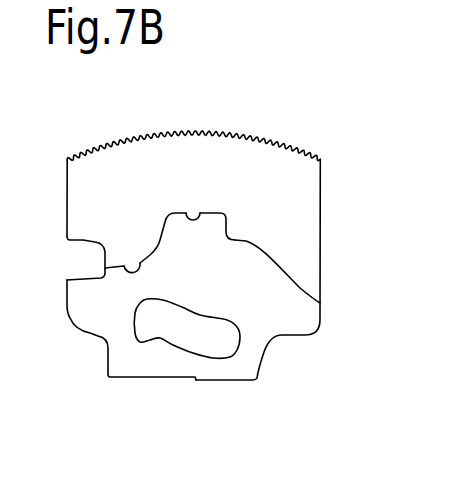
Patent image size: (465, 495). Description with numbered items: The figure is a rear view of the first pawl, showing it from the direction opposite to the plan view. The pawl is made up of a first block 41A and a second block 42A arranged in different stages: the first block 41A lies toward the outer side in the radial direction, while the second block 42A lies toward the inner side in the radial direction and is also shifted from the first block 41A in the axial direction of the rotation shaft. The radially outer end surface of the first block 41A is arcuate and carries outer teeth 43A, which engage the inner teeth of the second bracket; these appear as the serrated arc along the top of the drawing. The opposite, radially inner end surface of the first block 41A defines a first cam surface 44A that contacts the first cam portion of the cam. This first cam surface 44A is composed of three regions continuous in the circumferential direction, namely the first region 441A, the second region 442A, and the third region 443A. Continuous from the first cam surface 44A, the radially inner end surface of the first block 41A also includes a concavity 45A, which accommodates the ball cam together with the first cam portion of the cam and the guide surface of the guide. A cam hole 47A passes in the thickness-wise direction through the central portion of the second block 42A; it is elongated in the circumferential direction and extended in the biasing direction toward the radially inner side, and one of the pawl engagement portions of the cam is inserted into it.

The first block 41A is at (312, 184).
The second block 42A is at (120, 360).
The outer teeth 43A is at (230, 137).
The first cam surface 44A is at (249, 251).
The concavity 45A is at (77, 249).
The cam hole 47A is at (207, 354).
The first region 441A is at (296, 288).
The second region 442A is at (193, 215).
The third region 443A is at (134, 270).